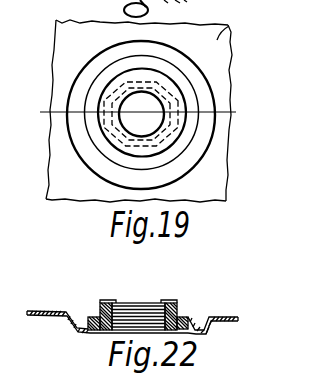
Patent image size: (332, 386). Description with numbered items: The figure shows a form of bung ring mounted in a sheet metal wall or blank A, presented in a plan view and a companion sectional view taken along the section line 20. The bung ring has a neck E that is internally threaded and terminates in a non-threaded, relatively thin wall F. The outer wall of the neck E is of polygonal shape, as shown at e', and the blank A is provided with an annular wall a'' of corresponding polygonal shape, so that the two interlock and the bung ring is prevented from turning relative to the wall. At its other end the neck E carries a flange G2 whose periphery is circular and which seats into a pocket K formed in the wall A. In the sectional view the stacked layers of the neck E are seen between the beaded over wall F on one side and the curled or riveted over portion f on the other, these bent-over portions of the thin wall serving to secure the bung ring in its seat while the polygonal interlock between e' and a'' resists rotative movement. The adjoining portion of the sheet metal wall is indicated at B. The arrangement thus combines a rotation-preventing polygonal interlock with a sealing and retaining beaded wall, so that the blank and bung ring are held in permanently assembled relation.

In FIG. 19, the blank A is at (233, 27).
In FIG. 22, the blank A is at (48, 311).
In FIG. 19, the polygonal outer wall of the neck e' is at (116, 100).
In FIG. 19, the flange G2 is at (173, 88).
In FIG. 19, the section line 20- 20 is at (140, 107).
In FIG. 22, the annular wall a'' is at (86, 303).
In FIG. 22, the relatively thin wall F is at (106, 302).
In FIG. 22, the neck E is at (135, 312).
In FIG. 22, the curled or riveted-over portion of wall f is at (172, 305).
In FIG. 22, the pocket K is at (181, 318).
In FIG. 22, the second plate B is at (236, 321).